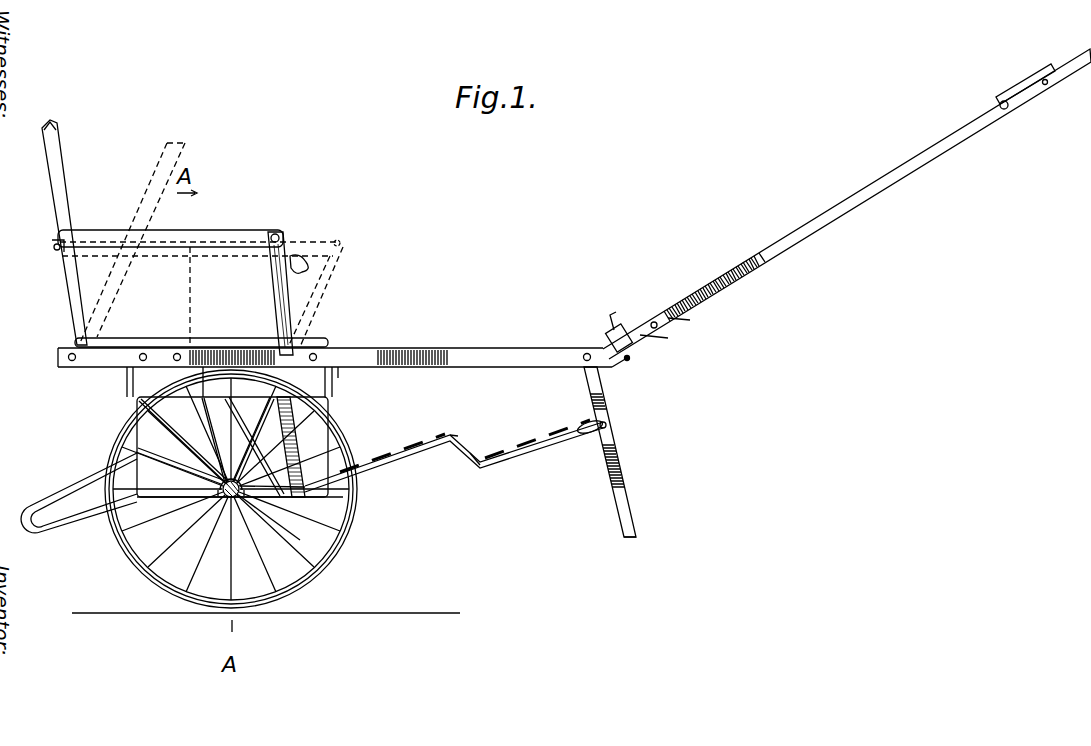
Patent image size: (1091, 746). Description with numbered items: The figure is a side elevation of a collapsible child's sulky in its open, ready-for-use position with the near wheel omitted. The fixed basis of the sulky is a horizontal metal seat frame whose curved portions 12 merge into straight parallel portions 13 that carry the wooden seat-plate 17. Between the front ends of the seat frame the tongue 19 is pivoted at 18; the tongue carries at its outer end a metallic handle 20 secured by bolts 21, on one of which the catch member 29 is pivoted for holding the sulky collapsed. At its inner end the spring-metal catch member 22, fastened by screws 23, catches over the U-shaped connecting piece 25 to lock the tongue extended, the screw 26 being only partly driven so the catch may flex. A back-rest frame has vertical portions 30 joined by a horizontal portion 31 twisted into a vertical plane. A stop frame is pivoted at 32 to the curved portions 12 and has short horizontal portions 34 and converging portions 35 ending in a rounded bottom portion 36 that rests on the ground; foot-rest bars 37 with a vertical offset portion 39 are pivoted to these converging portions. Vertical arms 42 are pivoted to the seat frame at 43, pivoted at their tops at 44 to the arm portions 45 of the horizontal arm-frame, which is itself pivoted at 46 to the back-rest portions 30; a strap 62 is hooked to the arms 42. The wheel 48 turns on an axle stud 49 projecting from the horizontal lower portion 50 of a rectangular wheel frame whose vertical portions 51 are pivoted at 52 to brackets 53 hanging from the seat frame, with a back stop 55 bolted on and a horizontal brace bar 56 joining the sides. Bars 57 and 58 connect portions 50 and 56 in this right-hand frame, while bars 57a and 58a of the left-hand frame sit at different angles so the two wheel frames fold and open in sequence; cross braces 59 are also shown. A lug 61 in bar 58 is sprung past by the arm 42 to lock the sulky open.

The curved portions 12 is at (462, 360).
The straight parallel portions 13 is at (345, 372).
The wooden seat-plate 17 is at (143, 322).
The pivot 18 is at (654, 321).
The tongue 19 is at (778, 230).
The metallic handle 20 is at (1052, 68).
The bolts 21 is at (1042, 88).
The catch member 22 is at (690, 320).
The screws 23 is at (668, 338).
The U-shaped connecting piece 25 is at (616, 322).
The screw 26 is at (630, 362).
The catch member 29 is at (1004, 100).
The vertical portions 30 is at (66, 214).
The horizontal portion 31 is at (50, 120).
The pivot 32 is at (587, 353).
The short horizontal portions 34 is at (592, 405).
The converging portions 35 is at (622, 450).
The rounded bottom portion 36 is at (638, 534).
The foot-rest bars 37 is at (452, 438).
The vertical offset portion 39 is at (470, 460).
The vertical arms 42 is at (282, 305).
The pivot 43 is at (310, 343).
The pivot 44 is at (277, 234).
The arm portions 45 is at (174, 236).
The pivot 46 is at (54, 252).
The wheels 48 is at (345, 553).
The axle studs 49 is at (190, 535).
The horizontal lower portions 50 is at (286, 540).
The vertical portions 51 is at (135, 420).
The pivot 52 is at (126, 385).
The brackets 53 is at (100, 368).
The back stops 55 is at (64, 505).
The horizontal brace bar 56 is at (218, 378).
The bar 57 is at (180, 466).
The bar 57a is at (330, 417).
The bar 58 is at (196, 440).
The bar 58a is at (294, 430).
The cross braces 59 is at (254, 446).
The lug or offset 61 is at (240, 500).
The strap 62 is at (310, 270).